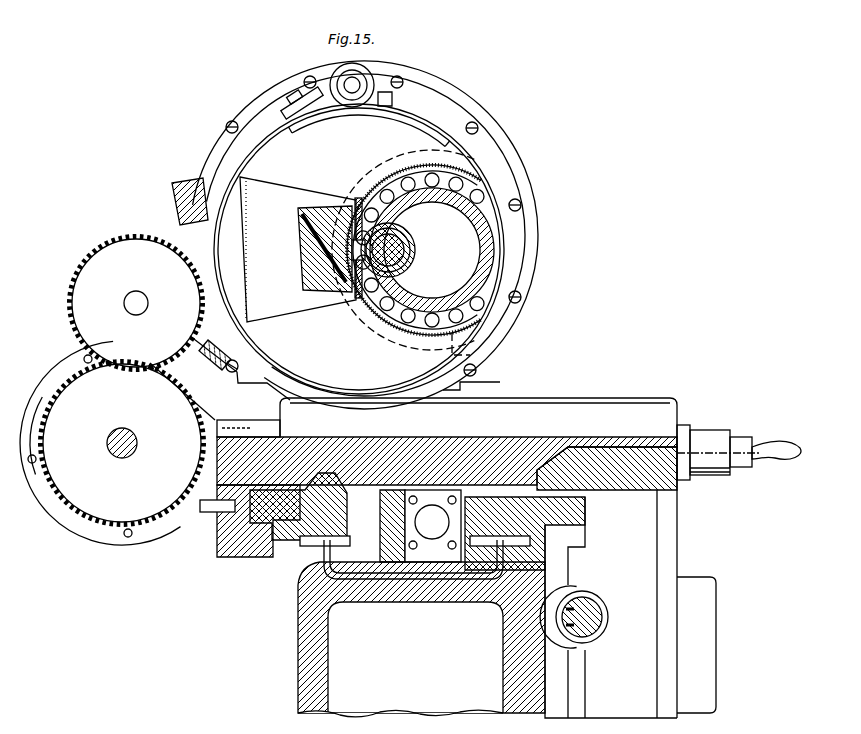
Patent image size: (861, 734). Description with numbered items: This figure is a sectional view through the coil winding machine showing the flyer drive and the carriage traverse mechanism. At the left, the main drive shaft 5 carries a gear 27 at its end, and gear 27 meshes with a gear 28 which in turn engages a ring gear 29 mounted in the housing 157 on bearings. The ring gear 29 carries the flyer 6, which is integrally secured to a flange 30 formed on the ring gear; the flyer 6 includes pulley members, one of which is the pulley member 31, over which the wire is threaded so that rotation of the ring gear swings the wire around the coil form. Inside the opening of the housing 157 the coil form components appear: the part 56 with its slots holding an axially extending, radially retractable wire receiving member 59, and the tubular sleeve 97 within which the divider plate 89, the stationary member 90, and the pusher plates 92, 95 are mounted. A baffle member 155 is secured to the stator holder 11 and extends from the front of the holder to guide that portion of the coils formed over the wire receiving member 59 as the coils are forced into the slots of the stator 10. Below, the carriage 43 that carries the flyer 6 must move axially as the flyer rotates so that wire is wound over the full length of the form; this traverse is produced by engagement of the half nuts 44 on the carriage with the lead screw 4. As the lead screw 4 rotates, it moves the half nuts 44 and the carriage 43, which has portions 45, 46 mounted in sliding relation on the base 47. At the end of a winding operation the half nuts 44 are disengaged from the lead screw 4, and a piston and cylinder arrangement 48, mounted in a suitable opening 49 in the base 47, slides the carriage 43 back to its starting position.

The lead screw 4 is at (597, 607).
The main drive shaft 5 is at (137, 441).
The flyer 6 is at (380, 103).
The stator 10 is at (462, 175).
The stator holder 11 is at (430, 145).
The gear 27 is at (100, 502).
The gear 28 is at (118, 250).
The ring gear 29 is at (203, 183).
The flange 30 is at (416, 124).
The pulley member 31 is at (372, 75).
The carriage 43 is at (623, 395).
The half nuts 44 is at (587, 600).
The portion 45 is at (630, 455).
The portion 46 is at (267, 467).
The base 47 is at (327, 480).
The piston and cylinder arrangement 48 is at (430, 510).
The opening 49 is at (447, 570).
The part 56 is at (330, 213).
The wire receiving member 59 is at (303, 215).
The divider plate 89 is at (398, 266).
The stationary member 90 is at (396, 252).
The pusher plate 92 is at (290, 110).
The pusher plate 95 is at (404, 240).
The tubular sleeve 97 is at (431, 192).
The baffle member 155 is at (300, 297).
The housing 157 is at (537, 268).